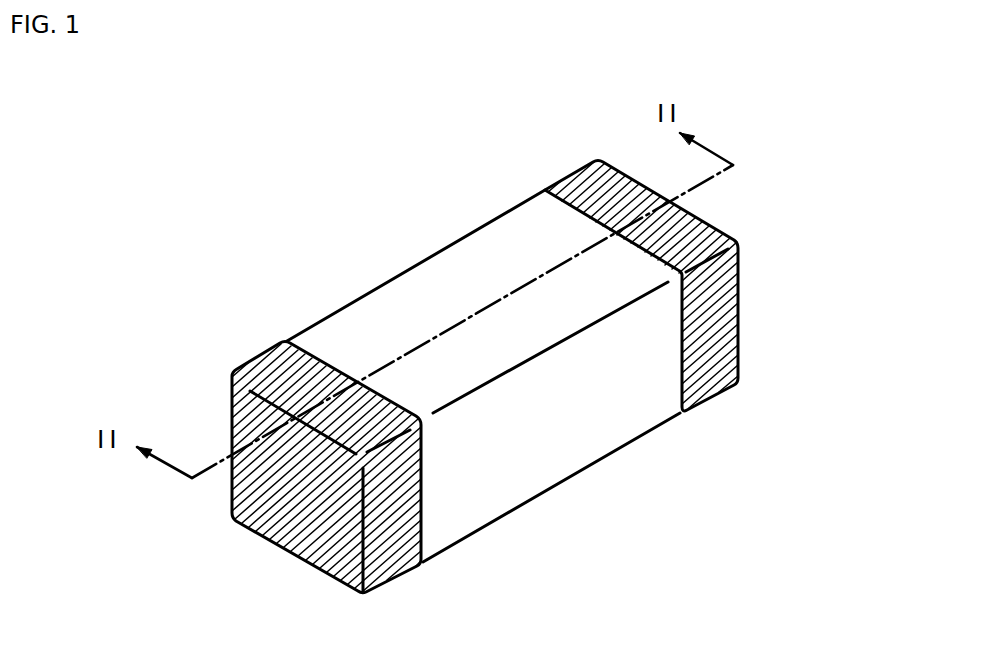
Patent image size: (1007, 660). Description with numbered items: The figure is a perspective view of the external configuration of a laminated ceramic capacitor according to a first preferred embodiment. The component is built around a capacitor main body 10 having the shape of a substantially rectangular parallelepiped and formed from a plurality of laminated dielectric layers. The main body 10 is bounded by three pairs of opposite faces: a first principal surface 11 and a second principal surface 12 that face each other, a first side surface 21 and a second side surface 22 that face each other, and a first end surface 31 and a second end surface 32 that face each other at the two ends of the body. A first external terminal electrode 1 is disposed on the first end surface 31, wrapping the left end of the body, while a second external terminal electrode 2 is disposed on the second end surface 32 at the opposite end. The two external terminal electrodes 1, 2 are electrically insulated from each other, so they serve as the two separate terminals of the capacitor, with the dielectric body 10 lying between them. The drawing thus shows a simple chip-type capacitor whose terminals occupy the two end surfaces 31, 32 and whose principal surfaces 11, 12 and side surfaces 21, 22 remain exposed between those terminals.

The capacitor main body 10 is at (510, 213).
The first external terminal electrode 1 is at (335, 562).
The second external terminal electrode 2 is at (740, 347).
The first principal surface 11 is at (427, 272).
The second principal surface 12 is at (487, 500).
The first side surface 21 is at (357, 325).
The second side surface 22 is at (562, 447).
The first end surface 31 is at (290, 522).
The second end surface 32 is at (728, 293).